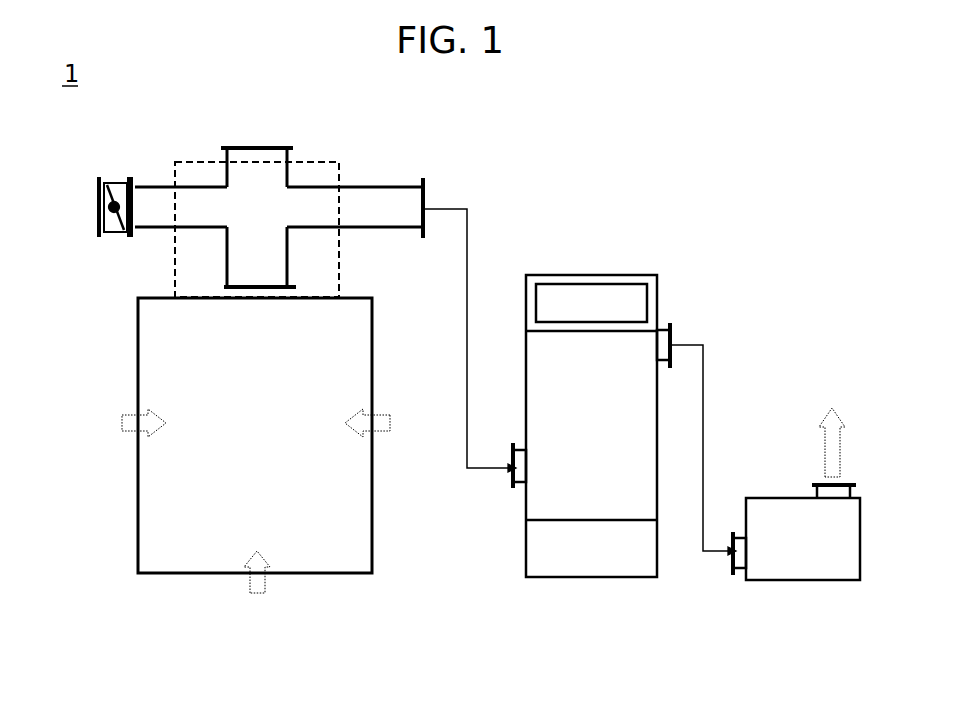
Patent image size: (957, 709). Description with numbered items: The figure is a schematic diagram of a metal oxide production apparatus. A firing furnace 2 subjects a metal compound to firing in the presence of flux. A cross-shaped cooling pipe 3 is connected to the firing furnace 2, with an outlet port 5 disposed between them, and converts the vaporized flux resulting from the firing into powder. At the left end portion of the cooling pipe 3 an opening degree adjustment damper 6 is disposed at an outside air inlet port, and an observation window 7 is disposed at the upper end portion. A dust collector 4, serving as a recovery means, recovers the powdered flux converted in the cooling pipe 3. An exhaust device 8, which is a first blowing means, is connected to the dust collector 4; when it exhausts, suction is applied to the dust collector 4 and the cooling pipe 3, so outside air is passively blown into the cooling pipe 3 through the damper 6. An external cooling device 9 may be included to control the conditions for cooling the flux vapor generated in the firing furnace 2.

The firing furnace 2 is at (150, 499).
The cooling pipe 3 is at (397, 203).
The dust collector 4 is at (530, 509).
The outlet port 5 is at (250, 296).
The opening degree adjustment damper 6 is at (122, 184).
The observation window 7 is at (260, 147).
The exhaust device 8 is at (773, 504).
The external cooling device 9 is at (197, 176).